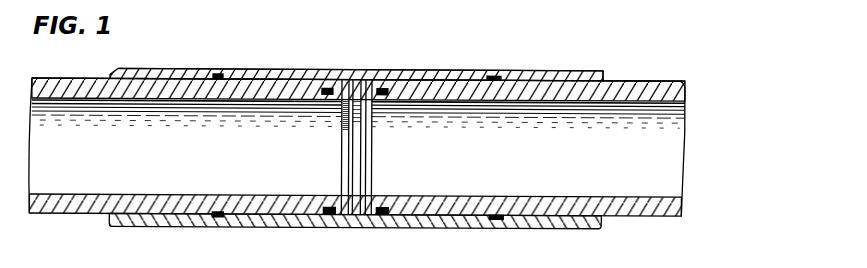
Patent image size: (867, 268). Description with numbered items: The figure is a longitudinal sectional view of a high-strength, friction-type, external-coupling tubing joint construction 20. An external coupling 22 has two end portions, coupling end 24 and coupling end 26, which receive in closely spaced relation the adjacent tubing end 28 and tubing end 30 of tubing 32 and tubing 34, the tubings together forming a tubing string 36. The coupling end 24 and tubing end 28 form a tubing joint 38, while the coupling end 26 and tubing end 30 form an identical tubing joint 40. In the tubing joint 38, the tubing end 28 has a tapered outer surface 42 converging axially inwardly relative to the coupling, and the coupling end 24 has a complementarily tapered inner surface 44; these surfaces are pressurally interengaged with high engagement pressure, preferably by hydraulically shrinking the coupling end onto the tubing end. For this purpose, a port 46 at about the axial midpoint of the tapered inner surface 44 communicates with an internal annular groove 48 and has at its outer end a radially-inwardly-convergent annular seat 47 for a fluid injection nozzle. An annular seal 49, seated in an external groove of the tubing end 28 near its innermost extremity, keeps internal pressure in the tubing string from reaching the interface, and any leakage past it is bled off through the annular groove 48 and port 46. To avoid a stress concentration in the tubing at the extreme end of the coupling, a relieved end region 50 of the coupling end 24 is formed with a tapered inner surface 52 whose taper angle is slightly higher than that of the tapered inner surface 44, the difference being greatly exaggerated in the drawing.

The coupling-type tubing joint construction 20 is at (378, 69).
The external coupling 22 is at (349, 70).
The coupling end 24 is at (198, 68).
The coupling end 26 is at (525, 70).
The tubing end 28 is at (227, 97).
The tubing end 30 is at (462, 99).
The tubing 32 is at (76, 78).
The tubing 34 is at (672, 82).
The tubing string 36 is at (625, 81).
The tubing joint 38 is at (288, 70).
The tubing joint 40 is at (454, 69).
The tapered outer surface 42 is at (298, 85).
The tapered inner surface 44 is at (246, 85).
The port 46 is at (215, 92).
The annular seat 47 is at (217, 74).
The internal annular groove 48 is at (222, 213).
The annular seal 49 is at (329, 206).
The relieved end region 50 is at (130, 218).
The tapered inner surface 52 is at (110, 213).